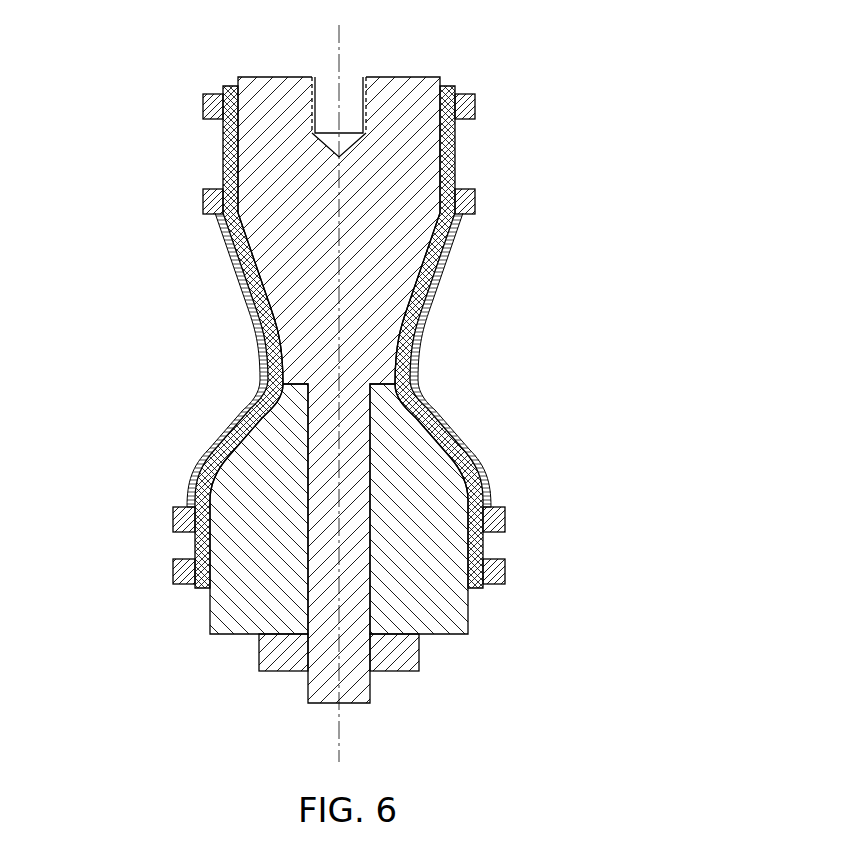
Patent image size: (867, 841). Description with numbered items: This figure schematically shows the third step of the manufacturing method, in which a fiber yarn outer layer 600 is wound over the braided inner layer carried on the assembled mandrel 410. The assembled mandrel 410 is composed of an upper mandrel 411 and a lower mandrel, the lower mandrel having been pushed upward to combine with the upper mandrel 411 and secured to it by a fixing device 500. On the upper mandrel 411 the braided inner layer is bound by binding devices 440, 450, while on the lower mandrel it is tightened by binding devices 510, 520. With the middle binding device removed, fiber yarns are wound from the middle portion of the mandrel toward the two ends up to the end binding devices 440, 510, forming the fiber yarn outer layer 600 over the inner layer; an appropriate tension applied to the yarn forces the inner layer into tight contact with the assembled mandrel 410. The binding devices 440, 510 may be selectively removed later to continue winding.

The assembled mandrel 410 is at (357, 361).
The upper mandrel 411 is at (305, 268).
The binding device 440 is at (202, 202).
The binding device 450 is at (202, 103).
The fixing device 500 is at (280, 668).
The binding device 510 is at (173, 523).
The binding device 520 is at (173, 573).
The fiber yarn outer layer 600 is at (420, 372).